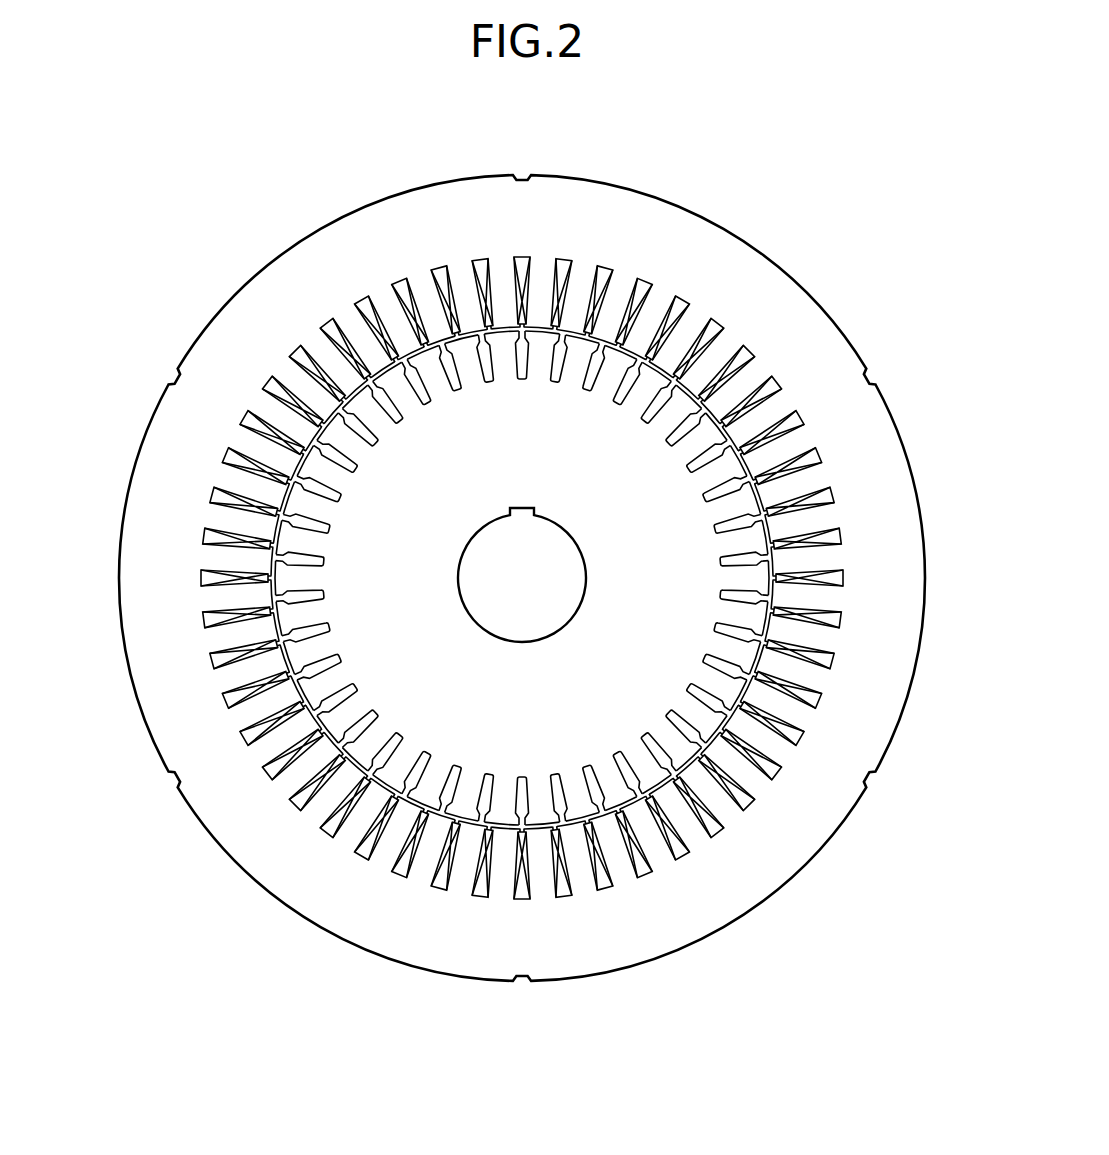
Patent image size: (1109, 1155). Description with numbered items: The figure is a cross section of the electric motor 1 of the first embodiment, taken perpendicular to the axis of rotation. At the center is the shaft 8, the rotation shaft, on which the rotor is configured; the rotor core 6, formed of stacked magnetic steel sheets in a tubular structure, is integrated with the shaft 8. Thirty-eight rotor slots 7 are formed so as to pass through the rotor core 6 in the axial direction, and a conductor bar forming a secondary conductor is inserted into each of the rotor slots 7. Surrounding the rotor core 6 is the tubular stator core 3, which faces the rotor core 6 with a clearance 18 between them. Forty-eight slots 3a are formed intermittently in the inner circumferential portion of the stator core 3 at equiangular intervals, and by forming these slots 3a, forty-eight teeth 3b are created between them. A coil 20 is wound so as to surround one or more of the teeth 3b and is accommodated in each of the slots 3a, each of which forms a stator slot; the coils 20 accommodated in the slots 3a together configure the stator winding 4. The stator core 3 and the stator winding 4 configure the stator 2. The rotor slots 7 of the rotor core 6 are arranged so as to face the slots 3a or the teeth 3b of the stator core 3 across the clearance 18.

The electric motor 1 is at (513, 597).
The stator 2 is at (513, 615).
The stator core 3 is at (513, 615).
The slots 3a is at (778, 388).
The teeth 3b is at (823, 559).
The stator winding 4 is at (490, 634).
The rotor core 6 is at (367, 610).
The rotor slots 7 is at (337, 698).
The shaft 8 is at (551, 538).
The clearance 18 is at (273, 552).
The coil 20 is at (833, 662).